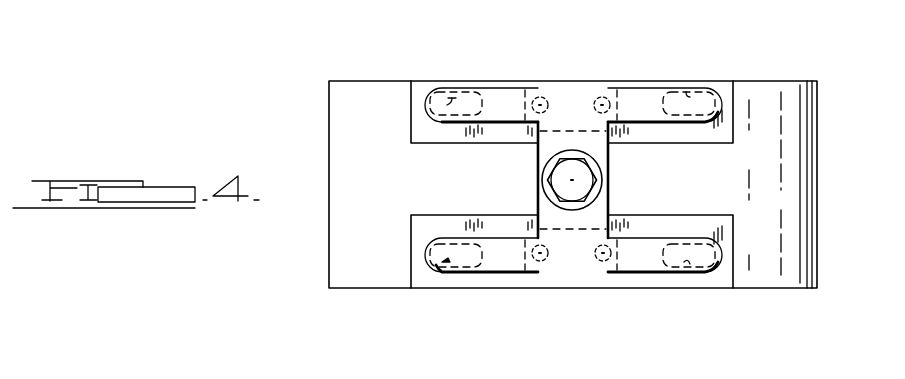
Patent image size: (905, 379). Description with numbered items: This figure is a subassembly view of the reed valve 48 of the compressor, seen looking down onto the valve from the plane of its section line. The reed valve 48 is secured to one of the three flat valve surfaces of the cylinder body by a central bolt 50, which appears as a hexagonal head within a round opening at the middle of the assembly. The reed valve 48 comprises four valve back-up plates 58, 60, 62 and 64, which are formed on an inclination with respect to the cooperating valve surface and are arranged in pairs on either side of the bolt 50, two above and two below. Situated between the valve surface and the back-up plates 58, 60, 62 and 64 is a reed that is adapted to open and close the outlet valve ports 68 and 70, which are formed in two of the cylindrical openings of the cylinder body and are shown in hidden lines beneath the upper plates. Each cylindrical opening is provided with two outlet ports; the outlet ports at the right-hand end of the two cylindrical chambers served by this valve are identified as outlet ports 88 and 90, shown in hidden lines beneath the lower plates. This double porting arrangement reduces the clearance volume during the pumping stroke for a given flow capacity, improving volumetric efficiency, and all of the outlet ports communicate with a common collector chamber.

The reed valve 48 is at (594, 140).
The bolt 50 is at (567, 167).
The valve back-up plate 58 is at (650, 93).
The valve back-up plate 60 is at (507, 90).
The valve back-up plate 62 is at (652, 258).
The valve back-up plate 64 is at (503, 260).
The outlet valve port 68 is at (686, 90).
The outlet valve port 70 is at (448, 92).
The outlet port 88 is at (440, 268).
The outlet port 90 is at (688, 263).